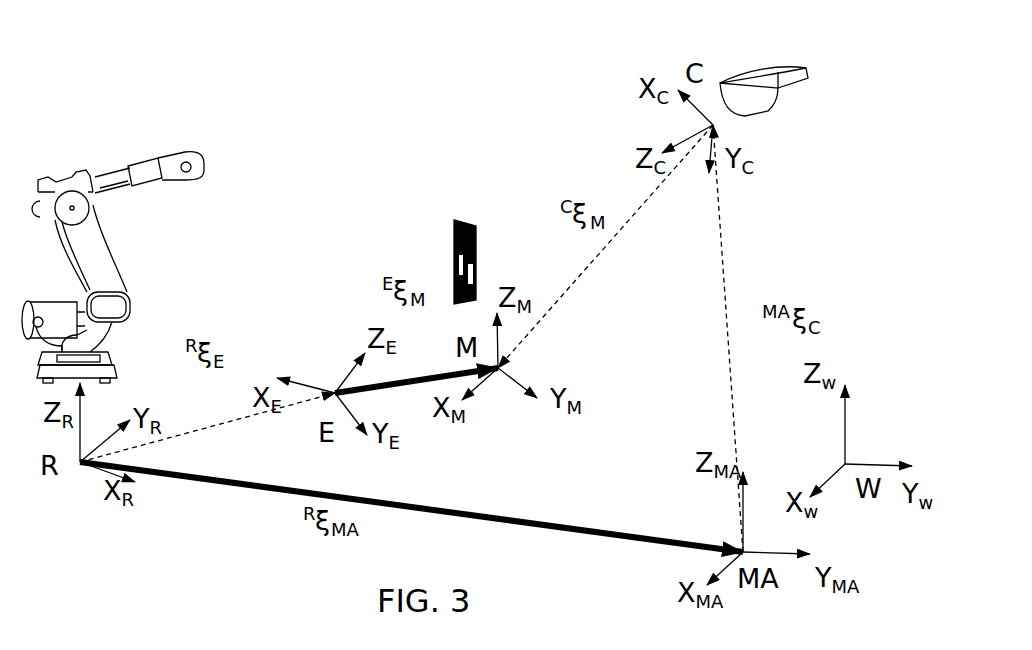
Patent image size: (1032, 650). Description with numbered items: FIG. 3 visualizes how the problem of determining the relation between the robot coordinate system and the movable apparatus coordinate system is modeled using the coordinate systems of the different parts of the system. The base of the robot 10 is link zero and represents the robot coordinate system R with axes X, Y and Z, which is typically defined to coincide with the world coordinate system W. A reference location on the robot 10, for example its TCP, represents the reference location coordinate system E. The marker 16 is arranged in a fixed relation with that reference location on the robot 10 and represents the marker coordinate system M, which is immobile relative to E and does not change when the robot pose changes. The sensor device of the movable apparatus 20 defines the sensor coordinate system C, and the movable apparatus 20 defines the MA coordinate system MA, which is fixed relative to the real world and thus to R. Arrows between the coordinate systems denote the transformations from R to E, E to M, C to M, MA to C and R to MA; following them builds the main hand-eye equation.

The robot 10 is at (152, 168).
The marker 16 is at (454, 224).
The movable apparatus 20 is at (806, 78).